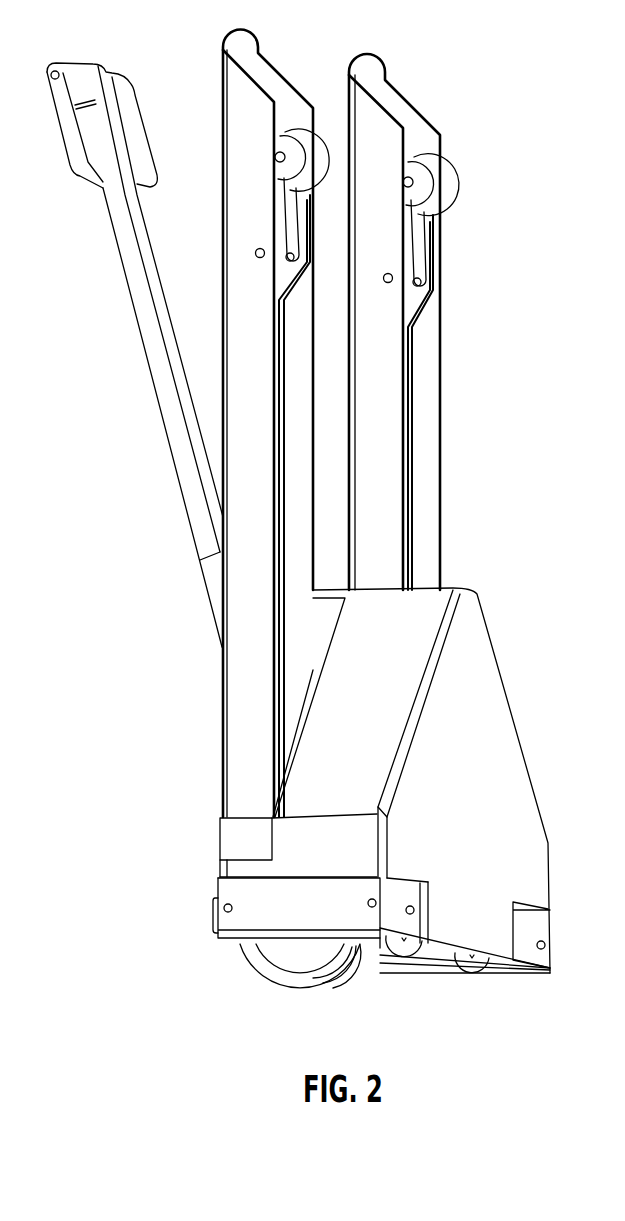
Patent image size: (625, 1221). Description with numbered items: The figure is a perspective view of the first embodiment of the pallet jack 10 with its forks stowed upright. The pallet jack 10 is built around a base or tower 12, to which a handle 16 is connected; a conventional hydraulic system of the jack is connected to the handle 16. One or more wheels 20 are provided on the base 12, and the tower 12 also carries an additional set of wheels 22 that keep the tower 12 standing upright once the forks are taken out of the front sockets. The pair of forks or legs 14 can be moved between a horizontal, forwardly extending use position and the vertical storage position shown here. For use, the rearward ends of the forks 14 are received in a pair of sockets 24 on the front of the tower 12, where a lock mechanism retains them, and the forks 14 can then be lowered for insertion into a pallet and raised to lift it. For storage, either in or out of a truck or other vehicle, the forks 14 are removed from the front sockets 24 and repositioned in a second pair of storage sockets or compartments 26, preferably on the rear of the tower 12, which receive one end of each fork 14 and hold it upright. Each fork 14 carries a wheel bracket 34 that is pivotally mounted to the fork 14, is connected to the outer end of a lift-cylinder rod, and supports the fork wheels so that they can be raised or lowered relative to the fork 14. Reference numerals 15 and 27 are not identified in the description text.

The pallet jack 10 is at (505, 470).
The base or tower 12 is at (517, 780).
The forks or legs 14 is at (248, 36).
The drive wheel 15 is at (352, 986).
The handle 16 is at (122, 270).
The wheels 20 is at (263, 977).
The additional set of wheels 22 is at (408, 957).
The sockets 24 is at (540, 932).
The storage sockets or compartments 26 is at (238, 845).
The fork rollers 27 is at (313, 155).
The wheel bracket 34 is at (438, 235).